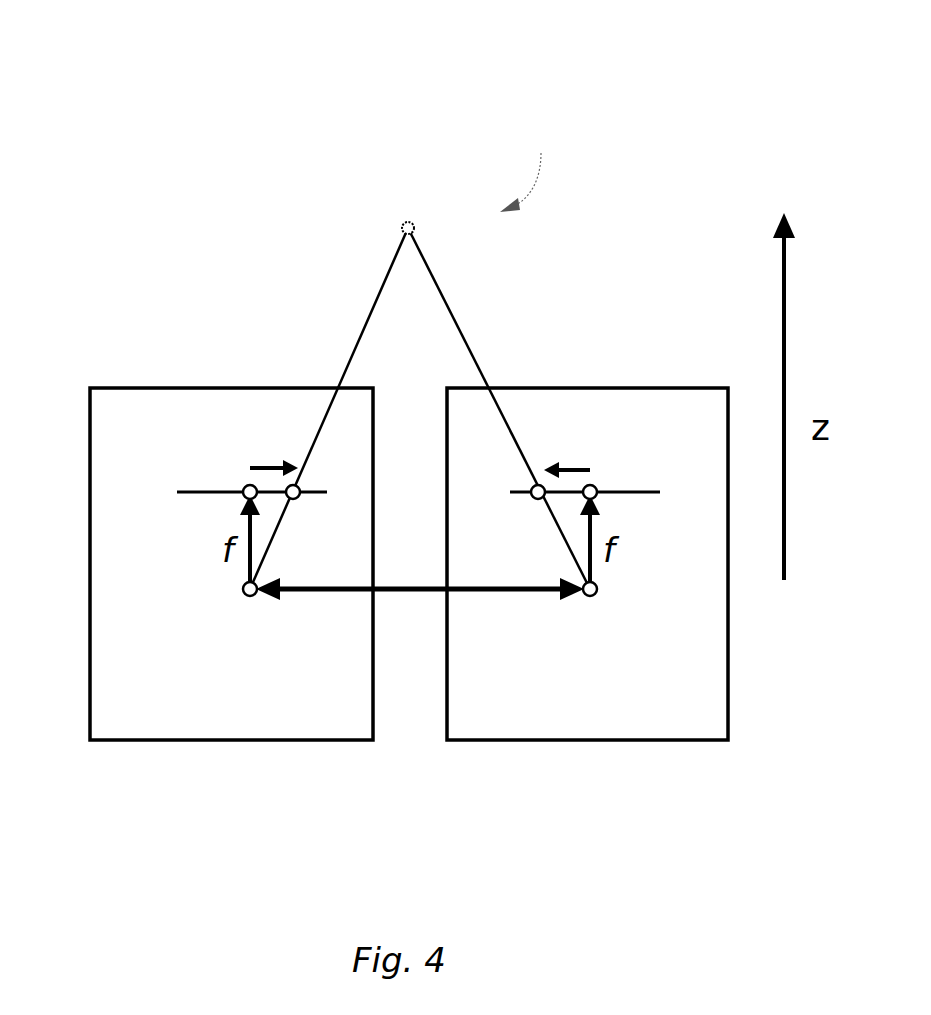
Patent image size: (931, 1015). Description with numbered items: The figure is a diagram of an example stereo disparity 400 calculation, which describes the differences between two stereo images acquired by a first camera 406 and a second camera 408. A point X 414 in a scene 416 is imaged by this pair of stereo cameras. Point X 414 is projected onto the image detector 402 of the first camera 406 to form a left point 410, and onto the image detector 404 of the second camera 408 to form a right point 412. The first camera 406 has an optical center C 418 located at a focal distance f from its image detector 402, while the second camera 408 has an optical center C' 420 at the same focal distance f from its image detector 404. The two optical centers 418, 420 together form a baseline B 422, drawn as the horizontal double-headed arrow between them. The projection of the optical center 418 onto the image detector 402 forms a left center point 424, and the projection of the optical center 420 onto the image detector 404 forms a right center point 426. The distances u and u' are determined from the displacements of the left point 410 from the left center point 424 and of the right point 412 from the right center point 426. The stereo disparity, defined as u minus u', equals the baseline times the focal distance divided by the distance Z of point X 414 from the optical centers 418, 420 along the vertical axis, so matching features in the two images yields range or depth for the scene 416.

The stereo disparity 400 is at (450, 67).
The image detector 402 is at (193, 495).
The image detector 404 is at (636, 495).
The first camera 406 is at (147, 742).
The second camera 408 is at (505, 742).
The left point 410 is at (296, 499).
The right point 412 is at (537, 499).
The point X 414 is at (401, 226).
The scene 416 is at (529, 169).
The optical center C 418 is at (247, 598).
The optical center C' 420 is at (594, 598).
The baseline B 422 is at (533, 596).
The left center point 424 is at (247, 486).
The right center point 426 is at (593, 486).